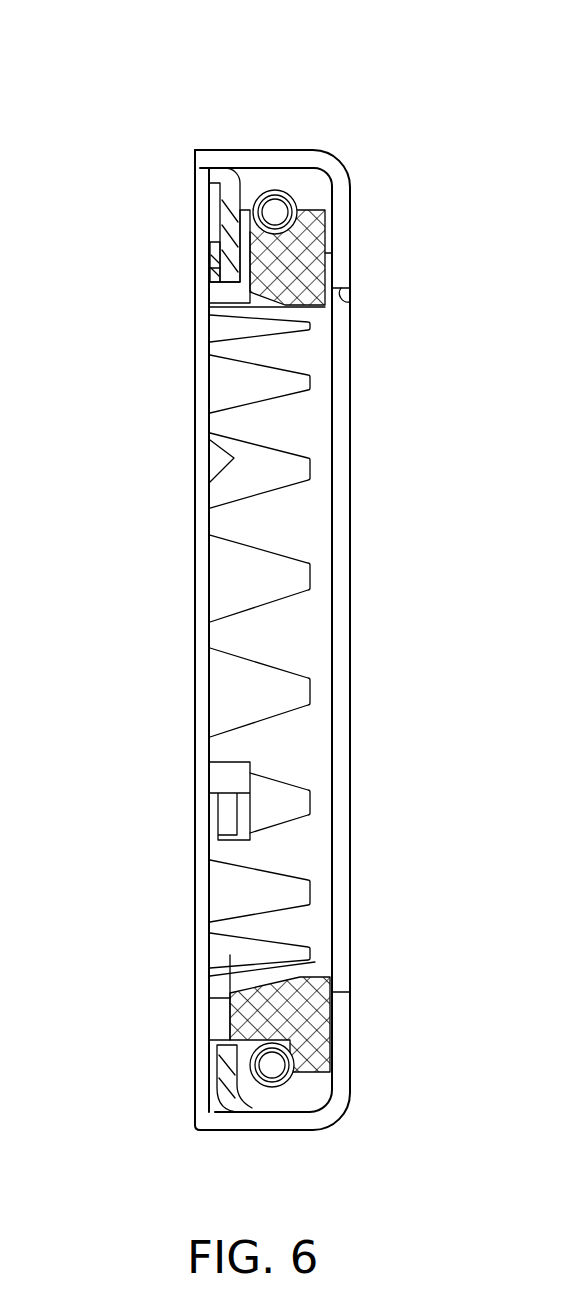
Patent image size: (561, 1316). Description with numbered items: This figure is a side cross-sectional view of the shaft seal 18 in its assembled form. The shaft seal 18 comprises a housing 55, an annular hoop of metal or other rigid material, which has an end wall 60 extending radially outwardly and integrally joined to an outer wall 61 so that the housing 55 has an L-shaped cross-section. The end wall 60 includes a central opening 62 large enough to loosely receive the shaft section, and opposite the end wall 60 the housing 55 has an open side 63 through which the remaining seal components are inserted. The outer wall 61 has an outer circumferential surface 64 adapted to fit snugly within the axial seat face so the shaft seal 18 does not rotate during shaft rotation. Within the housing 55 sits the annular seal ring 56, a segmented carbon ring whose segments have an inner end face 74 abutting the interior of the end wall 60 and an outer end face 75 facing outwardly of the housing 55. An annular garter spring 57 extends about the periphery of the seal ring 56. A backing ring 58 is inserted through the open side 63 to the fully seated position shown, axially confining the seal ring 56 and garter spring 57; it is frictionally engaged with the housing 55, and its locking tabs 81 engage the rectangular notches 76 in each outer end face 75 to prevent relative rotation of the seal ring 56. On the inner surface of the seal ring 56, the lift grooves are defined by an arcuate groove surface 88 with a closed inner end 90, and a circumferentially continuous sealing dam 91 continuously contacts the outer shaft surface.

The shaft seal 18 is at (98, 114).
The housing 55 is at (307, 148).
The seal ring 56 is at (333, 232).
The garter spring 57 is at (257, 186).
The backing ring 58 is at (213, 216).
The end wall 60 is at (342, 275).
The outer wall 61 is at (205, 158).
The central opening 62 is at (348, 303).
The open side 63 is at (156, 179).
The outer circumferential surface 64 is at (278, 150).
The inner end face 74 is at (327, 1013).
The outer end face 75 is at (212, 268).
The rectangular notch 76 is at (223, 293).
The locking tab 81 is at (217, 252).
The arcuate groove surface 88 is at (290, 973).
The closed inner end 90 is at (307, 977).
The sealing dam 91 is at (220, 983).